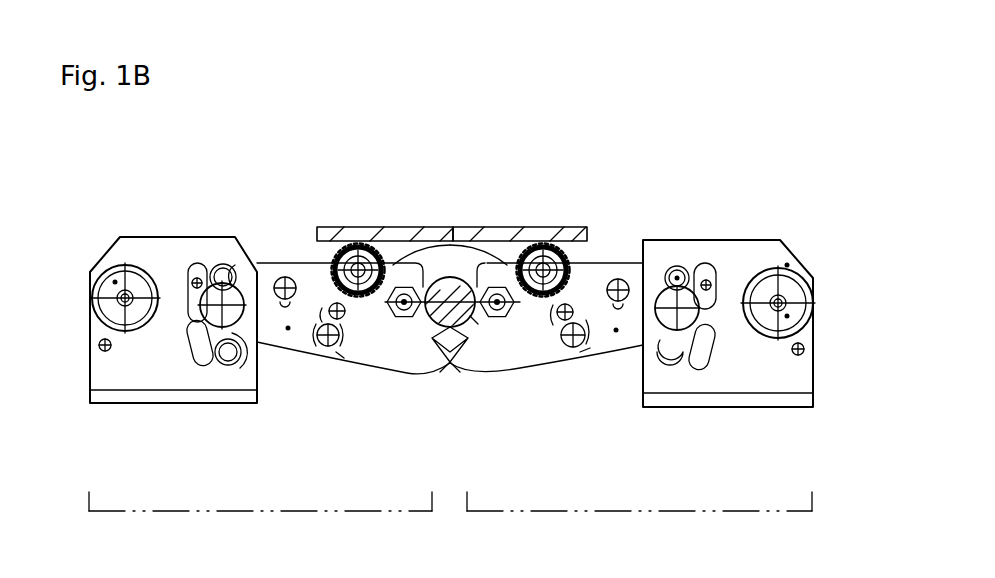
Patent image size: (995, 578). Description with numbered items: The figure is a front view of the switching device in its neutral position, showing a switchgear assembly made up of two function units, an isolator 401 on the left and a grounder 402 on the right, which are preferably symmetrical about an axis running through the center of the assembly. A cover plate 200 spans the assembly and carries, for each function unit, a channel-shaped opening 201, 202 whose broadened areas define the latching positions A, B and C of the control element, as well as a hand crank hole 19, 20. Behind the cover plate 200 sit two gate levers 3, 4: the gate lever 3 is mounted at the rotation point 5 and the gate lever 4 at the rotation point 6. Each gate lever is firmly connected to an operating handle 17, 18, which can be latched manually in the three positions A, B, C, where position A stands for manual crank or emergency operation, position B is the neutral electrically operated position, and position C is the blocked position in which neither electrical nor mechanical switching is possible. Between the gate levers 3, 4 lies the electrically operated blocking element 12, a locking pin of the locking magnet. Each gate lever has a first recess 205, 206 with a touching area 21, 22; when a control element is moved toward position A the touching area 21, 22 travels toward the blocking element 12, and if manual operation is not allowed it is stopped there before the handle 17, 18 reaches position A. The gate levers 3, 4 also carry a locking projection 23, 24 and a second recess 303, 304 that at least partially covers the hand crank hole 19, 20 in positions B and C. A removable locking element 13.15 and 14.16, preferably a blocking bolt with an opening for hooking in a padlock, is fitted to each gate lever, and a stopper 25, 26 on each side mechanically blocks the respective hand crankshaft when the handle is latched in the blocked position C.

The locking element with opening 13.15 is at (97, 243).
The locking element with opening 14.16 is at (810, 372).
The operating handle 17 is at (182, 278).
The operating handle 18 is at (728, 280).
The hand crank hole 19 is at (370, 197).
The hand crank hole 20 is at (544, 197).
The gate lever 3 is at (337, 371).
The gate lever 4 is at (599, 371).
The rotation point 5 is at (409, 219).
The rotation point 6 is at (491, 219).
The blocking element 12 is at (452, 350).
The touching area 21 is at (382, 382).
The touching area 22 is at (527, 382).
The locking projection 23 is at (421, 403).
The locking projection 24 is at (500, 397).
The stopper 25 is at (304, 378).
The stopper 26 is at (593, 379).
The cover plate 200 is at (829, 210).
The opening 201 is at (188, 222).
The opening 202 is at (692, 259).
The first recess 205 is at (392, 185).
The first recess 206 is at (502, 185).
The second recess 303 is at (326, 201).
The second recess 304 is at (570, 201).
The isolator 401 is at (260, 524).
The grounder 402 is at (639, 524).
The latching position A is at (192, 421).
The latching position B is at (192, 380).
The latching position C is at (187, 355).